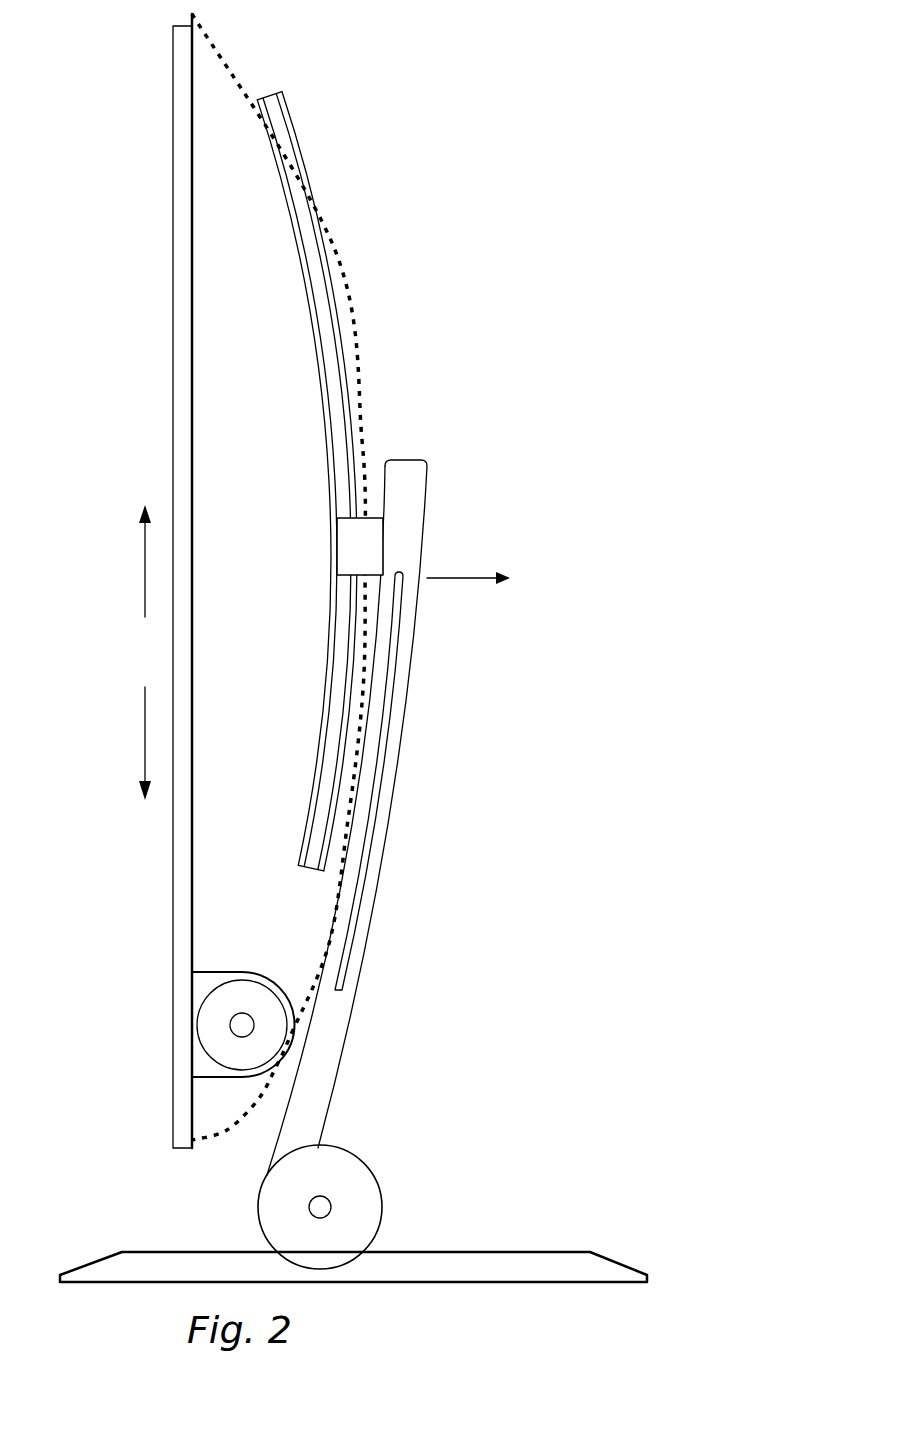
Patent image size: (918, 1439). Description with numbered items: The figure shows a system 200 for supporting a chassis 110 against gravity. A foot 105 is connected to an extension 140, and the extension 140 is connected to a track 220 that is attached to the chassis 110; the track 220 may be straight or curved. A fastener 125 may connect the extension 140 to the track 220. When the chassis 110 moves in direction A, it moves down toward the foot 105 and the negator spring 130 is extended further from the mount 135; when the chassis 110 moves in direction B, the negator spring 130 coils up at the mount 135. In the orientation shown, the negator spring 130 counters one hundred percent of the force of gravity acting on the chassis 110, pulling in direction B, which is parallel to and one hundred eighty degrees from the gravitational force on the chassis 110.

The system 200 is at (120, 125).
The chassis 110 is at (177, 362).
The track 220 is at (327, 693).
The fastener 125 is at (383, 540).
The negator spring 130 is at (397, 653).
The extension 140 is at (386, 825).
The mount 135 is at (200, 1067).
The foot 105 is at (498, 1267).